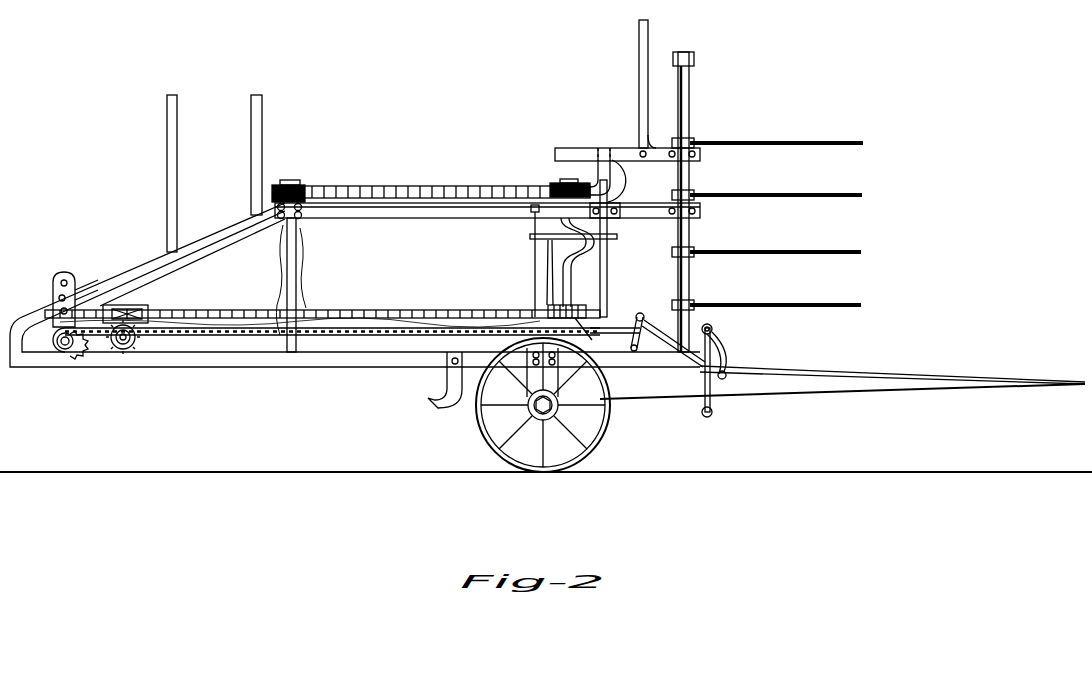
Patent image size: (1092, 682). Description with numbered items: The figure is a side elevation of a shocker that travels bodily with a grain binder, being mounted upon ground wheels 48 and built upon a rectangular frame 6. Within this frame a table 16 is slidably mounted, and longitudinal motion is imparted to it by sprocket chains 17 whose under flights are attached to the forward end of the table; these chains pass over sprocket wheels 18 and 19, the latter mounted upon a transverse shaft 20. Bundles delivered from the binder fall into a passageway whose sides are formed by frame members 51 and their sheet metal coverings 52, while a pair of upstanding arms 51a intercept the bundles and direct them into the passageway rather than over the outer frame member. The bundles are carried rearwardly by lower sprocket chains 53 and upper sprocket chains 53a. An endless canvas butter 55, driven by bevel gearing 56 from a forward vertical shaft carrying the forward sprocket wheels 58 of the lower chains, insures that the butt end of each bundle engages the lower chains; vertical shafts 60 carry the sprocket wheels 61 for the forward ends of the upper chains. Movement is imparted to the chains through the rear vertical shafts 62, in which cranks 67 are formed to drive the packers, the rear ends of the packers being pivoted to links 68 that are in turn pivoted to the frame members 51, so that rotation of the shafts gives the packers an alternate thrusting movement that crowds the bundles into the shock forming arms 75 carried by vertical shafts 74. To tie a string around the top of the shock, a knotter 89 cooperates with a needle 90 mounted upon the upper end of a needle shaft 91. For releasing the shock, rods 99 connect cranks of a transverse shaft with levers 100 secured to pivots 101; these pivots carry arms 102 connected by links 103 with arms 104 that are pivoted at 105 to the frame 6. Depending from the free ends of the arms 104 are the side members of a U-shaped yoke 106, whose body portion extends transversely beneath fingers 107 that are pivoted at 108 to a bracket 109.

The rectangular frame 6 is at (368, 362).
The table 16 is at (771, 368).
The sprocket chains 17 is at (218, 334).
The sprocket wheels 18 is at (558, 372).
The sprocket wheels 19 is at (68, 350).
The transverse shaft 20 is at (60, 348).
The ground wheels 48 is at (604, 428).
The frame members 51 is at (478, 217).
The upstanding arms 51a is at (251, 170).
The sheet metal coverings 52 is at (439, 278).
The lower sprocket chains 53 is at (506, 305).
The upper sprocket chains 53a is at (498, 186).
The endless canvas butter 55 is at (76, 283).
The bevel gearing 56 is at (136, 338).
The forward sprocket wheels 58 is at (144, 310).
The vertical shafts 60 is at (298, 247).
The sprocket wheels 61 is at (306, 190).
The rear vertical shafts 62 is at (572, 267).
The cranks 67 is at (606, 246).
The links 68 is at (530, 238).
The vertical shafts 74 is at (690, 272).
The shock forming arms 75 is at (777, 256).
The knotter 89 is at (616, 184).
The needle 90 is at (571, 178).
The needle shaft 91 is at (608, 288).
The rods 99 is at (631, 350).
The levers 100 is at (615, 336).
The pivots 101 is at (644, 321).
The arms 102 is at (673, 344).
The links 103 is at (713, 328).
The arms 104 is at (728, 348).
The pivot 105 is at (727, 374).
The U-shaped yoke 106 is at (705, 382).
The fingers 107 is at (830, 392).
The pivot 108 is at (446, 385).
The bracket 109 is at (470, 415).